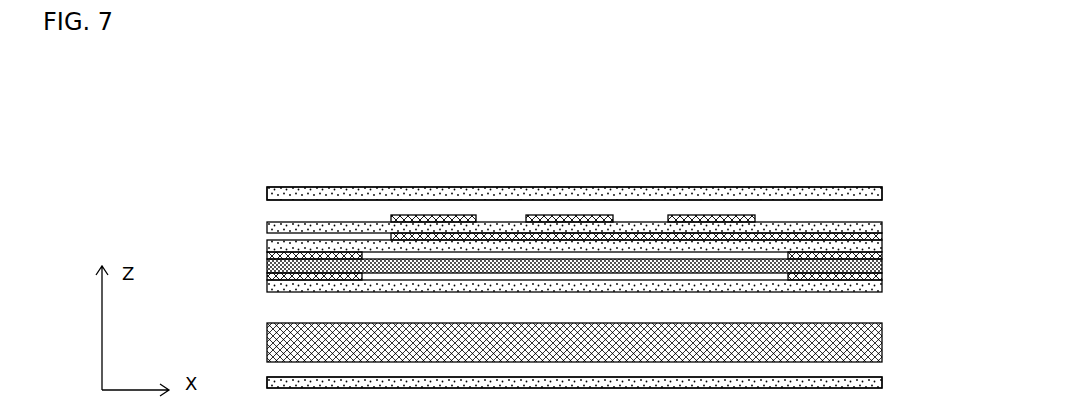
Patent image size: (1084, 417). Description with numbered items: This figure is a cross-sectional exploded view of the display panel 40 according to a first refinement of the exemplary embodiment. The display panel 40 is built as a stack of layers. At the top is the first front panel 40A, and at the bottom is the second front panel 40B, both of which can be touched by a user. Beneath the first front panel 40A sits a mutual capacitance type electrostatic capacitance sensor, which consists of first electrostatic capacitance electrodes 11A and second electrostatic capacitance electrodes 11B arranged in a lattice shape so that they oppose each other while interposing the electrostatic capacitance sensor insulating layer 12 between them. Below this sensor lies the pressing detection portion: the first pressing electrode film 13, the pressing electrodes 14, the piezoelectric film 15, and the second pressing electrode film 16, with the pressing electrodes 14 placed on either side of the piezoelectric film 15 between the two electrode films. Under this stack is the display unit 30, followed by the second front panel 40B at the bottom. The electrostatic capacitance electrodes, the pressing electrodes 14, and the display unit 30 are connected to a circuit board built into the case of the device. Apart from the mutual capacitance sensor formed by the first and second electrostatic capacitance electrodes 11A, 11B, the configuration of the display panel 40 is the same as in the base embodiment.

The display panel 40 is at (893, 118).
The first front panel 40A is at (323, 192).
The second front panel 40B is at (882, 384).
The first electrostatic capacitance electrodes 11A is at (668, 216).
The second electrostatic capacitance electrodes 11B is at (762, 236).
The electrostatic capacitance sensor insulating layer 12 is at (267, 228).
The first pressing electrode film 13 is at (267, 246).
The pressing electrodes 14 is at (267, 277).
The piezoelectric film 15 is at (870, 256).
The second pressing electrode film 16 is at (882, 288).
The display unit 30 is at (874, 343).